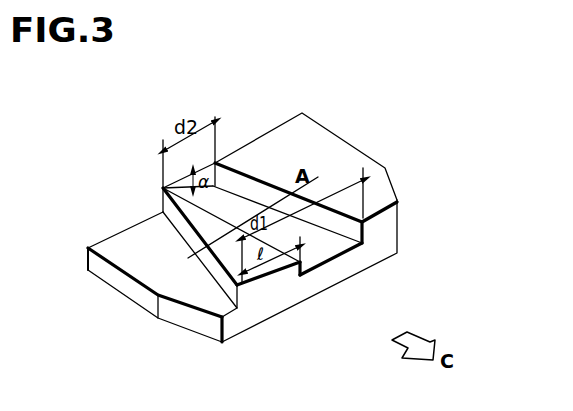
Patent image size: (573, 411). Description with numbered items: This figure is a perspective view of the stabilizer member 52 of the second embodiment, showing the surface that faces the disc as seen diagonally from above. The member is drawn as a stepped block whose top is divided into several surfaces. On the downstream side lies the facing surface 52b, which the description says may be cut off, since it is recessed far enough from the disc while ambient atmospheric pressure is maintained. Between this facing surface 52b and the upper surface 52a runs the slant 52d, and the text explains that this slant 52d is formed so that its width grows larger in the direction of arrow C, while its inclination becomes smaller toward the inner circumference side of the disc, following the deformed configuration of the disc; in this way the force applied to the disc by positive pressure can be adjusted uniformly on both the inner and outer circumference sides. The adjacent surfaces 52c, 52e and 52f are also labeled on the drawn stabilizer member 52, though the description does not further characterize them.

The stabilizer member 52 is at (320, 283).
The upper top surface 52a is at (350, 156).
The facing surface 52b is at (130, 237).
The floor surface 52c is at (344, 247).
The slant 52d is at (278, 268).
The wall surface 52e is at (226, 218).
The wall surface 52f is at (186, 261).